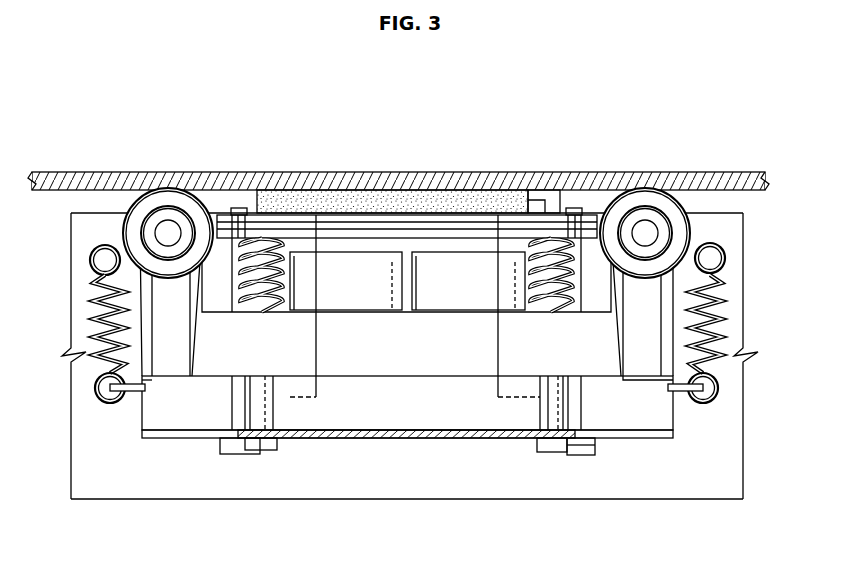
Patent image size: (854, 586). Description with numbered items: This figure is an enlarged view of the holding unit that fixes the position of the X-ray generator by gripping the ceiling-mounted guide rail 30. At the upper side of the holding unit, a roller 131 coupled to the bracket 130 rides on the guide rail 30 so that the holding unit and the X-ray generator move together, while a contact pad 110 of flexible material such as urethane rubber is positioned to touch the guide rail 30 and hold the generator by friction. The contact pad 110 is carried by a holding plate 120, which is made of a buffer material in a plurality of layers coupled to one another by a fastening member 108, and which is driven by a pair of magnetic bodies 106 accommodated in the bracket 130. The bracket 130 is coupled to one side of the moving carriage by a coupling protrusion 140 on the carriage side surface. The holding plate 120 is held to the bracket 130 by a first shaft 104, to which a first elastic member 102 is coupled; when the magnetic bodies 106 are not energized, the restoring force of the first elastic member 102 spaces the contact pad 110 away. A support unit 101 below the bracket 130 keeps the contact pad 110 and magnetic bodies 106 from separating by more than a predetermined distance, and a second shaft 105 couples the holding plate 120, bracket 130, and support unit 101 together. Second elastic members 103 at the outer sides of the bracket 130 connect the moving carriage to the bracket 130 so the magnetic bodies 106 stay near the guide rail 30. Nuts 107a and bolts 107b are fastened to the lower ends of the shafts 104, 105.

The guide rail 30 is at (217, 180).
The fastening member 108 is at (247, 213).
The magnetic body 106 is at (356, 264).
The contact pad 110 is at (436, 201).
The holding plate 120 is at (543, 215).
The roller 131 is at (640, 203).
The coupling protrusion 140 is at (725, 259).
The second elastic member 103 is at (722, 306).
The first elastic member 102 is at (240, 285).
The second shaft 105 is at (232, 398).
The first shaft 104 is at (268, 416).
The support unit 101 is at (410, 434).
The bolt 107b is at (540, 446).
The nut 107a is at (577, 452).
The bracket 130 is at (597, 365).